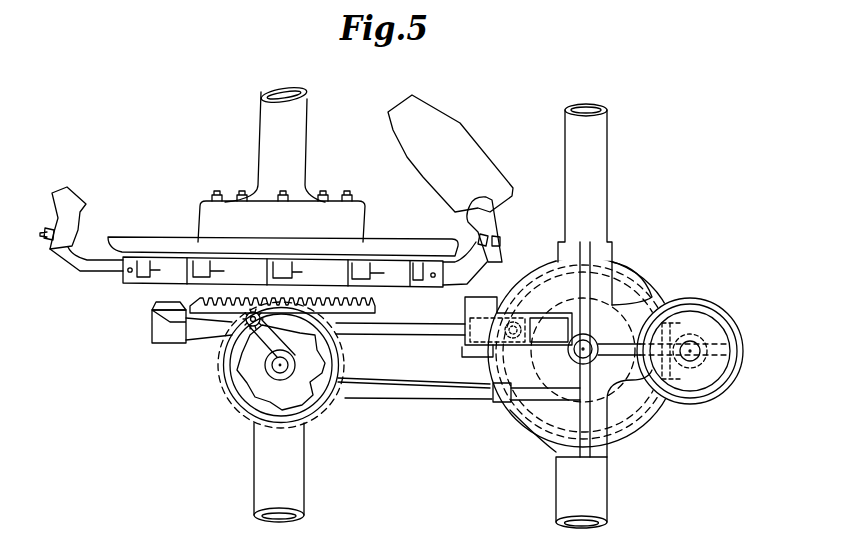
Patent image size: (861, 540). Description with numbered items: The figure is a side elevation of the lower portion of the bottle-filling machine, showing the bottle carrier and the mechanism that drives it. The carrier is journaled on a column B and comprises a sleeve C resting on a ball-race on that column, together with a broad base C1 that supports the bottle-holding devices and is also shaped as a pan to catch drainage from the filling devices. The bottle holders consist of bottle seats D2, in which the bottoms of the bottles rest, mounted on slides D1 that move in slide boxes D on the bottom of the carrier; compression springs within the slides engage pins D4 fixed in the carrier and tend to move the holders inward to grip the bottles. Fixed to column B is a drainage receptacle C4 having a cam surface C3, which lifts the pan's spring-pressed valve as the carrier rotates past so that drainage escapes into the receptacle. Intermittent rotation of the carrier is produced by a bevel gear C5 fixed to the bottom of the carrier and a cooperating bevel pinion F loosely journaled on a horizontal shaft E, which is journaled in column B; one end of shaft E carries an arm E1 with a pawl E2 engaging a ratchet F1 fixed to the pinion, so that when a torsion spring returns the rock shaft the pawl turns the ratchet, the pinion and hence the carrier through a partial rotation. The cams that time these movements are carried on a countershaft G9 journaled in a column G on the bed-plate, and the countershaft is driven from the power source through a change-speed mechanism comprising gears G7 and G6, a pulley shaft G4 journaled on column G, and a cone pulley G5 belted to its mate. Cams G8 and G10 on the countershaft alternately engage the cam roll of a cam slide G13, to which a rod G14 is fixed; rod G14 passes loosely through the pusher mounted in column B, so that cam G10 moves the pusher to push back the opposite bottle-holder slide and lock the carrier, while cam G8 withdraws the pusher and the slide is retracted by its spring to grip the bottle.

The column B is at (306, 480).
The sleeve C is at (300, 152).
The broad base C1 is at (378, 249).
The cam surface C3 is at (150, 305).
The drainage receptacle C4 is at (152, 336).
The bevel gear C5 is at (375, 306).
The slide boxes D is at (283, 272).
The slides D1 is at (78, 268).
The bottle seats D2 is at (80, 209).
The pins D4 is at (121, 275).
The horizontal shaft E is at (280, 374).
The arm E1 is at (260, 332).
The pawl E2 is at (250, 326).
The bevel pinion F is at (338, 360).
The ratchet F1 is at (326, 397).
The column G is at (608, 490).
The pulley shaft G4 is at (700, 352).
The cone pulley G5 is at (713, 398).
The gear G6 is at (686, 337).
The gear G7 is at (630, 426).
The cam G8 is at (553, 297).
The countershaft G9 is at (576, 352).
The cam G10 is at (606, 358).
The cam slide G13 is at (490, 362).
The rod G14 is at (372, 331).